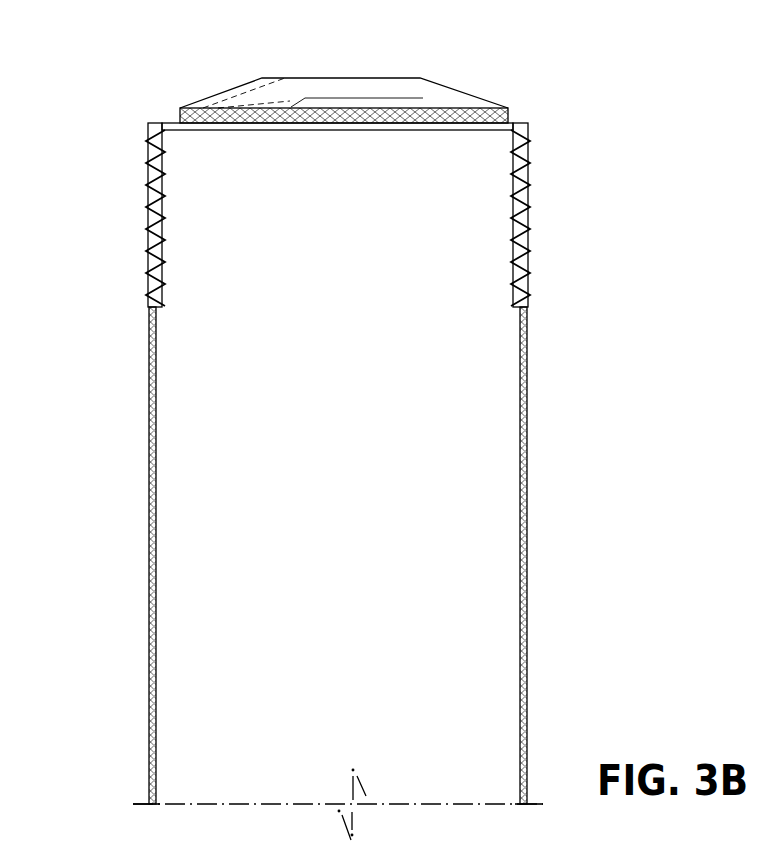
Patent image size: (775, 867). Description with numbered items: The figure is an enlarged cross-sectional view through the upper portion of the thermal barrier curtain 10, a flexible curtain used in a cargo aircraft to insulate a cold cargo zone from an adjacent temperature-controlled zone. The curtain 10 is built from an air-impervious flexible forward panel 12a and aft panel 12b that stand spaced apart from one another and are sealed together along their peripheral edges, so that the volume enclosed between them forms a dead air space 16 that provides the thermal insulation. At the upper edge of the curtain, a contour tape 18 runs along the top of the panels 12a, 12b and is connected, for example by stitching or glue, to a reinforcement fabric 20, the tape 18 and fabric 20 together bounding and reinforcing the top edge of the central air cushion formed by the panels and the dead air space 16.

The thermal barrier curtain 10 is at (588, 156).
The forward panel 12a is at (148, 534).
The aft panel 12b is at (525, 518).
The dead air space 16 is at (347, 423).
The contour tape 18 is at (198, 123).
The reinforcement fabric 20 is at (400, 103).